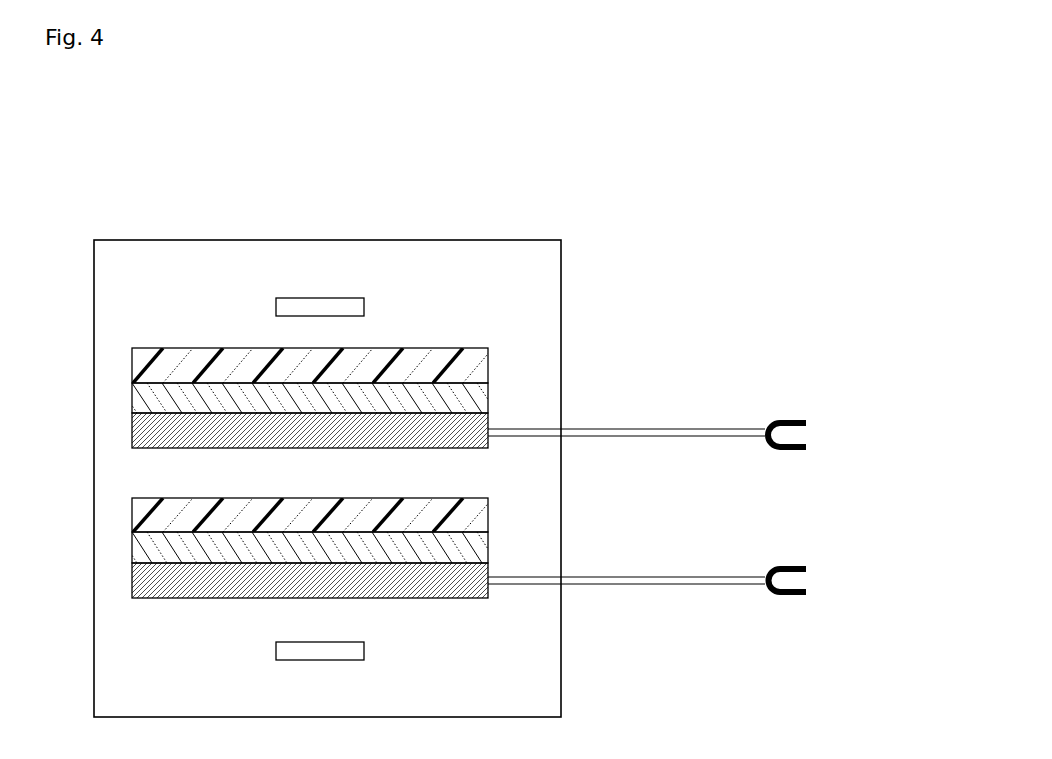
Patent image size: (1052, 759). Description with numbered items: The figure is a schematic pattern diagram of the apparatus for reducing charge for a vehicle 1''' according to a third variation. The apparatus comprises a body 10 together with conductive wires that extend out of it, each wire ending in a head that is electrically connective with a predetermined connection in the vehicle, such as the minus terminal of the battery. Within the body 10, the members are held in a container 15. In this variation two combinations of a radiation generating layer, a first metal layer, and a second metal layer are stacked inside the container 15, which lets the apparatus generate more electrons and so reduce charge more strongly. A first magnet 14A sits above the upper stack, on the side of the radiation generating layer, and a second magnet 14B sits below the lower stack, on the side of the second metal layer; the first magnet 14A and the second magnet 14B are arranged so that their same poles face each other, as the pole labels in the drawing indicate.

The apparatus for reducing charge for a vehicle 1''' is at (746, 116).
The container 15 is at (507, 239).
The body 10 is at (145, 263).
The first magnet 14A is at (366, 306).
The second magnet 14B is at (366, 651).